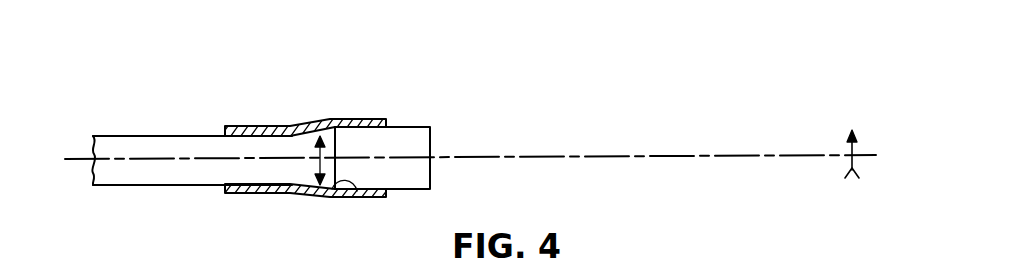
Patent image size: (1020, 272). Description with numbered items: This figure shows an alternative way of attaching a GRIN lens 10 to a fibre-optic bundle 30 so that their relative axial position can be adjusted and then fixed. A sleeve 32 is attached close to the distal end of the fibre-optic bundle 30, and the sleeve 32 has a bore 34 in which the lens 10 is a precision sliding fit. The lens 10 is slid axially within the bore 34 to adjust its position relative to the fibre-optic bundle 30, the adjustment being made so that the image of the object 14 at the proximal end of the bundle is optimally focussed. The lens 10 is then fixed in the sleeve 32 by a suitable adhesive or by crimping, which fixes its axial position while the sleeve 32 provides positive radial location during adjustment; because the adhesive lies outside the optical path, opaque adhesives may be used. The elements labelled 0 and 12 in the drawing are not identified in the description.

The optical axis 0 is at (660, 153).
The GRIN lens 10 is at (422, 127).
The sleeve 12 is at (347, 124).
The object 14 is at (856, 133).
The fibre-optic bundle 30 is at (166, 136).
The sleeve 32 is at (327, 132).
The bore 34 is at (355, 193).